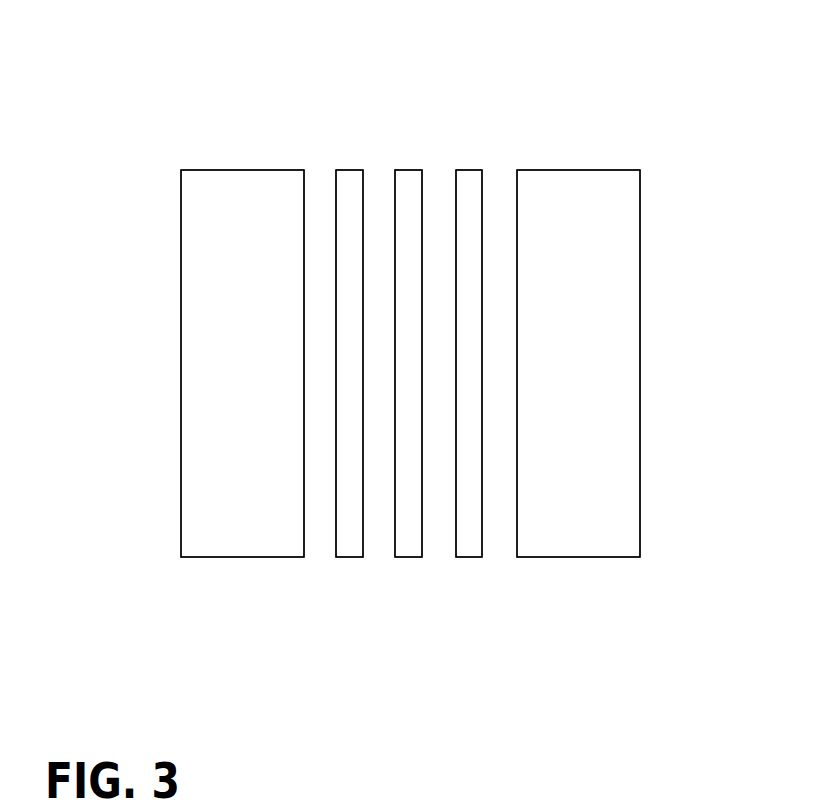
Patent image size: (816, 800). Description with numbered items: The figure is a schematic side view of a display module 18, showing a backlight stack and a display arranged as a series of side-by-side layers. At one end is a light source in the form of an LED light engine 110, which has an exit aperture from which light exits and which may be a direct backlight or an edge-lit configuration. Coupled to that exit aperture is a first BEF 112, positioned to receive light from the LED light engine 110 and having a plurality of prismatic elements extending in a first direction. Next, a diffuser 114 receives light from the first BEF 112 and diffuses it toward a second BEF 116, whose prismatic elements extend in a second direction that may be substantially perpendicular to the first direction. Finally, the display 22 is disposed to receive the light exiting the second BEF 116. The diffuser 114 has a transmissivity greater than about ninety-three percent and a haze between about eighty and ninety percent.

The display module 18 is at (537, 88).
The display 22 is at (580, 170).
The LED light engine 110 is at (238, 170).
The first BEF 112 is at (350, 557).
The diffuser 114 is at (407, 170).
The second BEF 116 is at (461, 557).